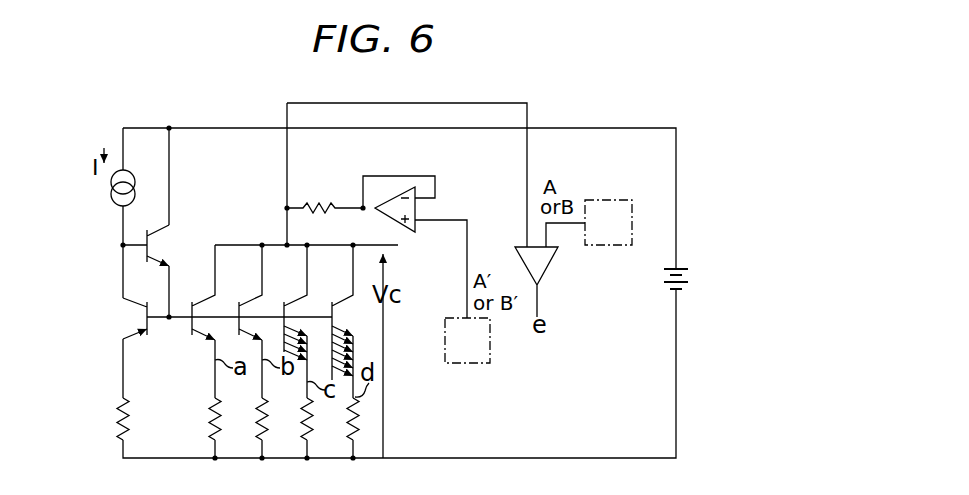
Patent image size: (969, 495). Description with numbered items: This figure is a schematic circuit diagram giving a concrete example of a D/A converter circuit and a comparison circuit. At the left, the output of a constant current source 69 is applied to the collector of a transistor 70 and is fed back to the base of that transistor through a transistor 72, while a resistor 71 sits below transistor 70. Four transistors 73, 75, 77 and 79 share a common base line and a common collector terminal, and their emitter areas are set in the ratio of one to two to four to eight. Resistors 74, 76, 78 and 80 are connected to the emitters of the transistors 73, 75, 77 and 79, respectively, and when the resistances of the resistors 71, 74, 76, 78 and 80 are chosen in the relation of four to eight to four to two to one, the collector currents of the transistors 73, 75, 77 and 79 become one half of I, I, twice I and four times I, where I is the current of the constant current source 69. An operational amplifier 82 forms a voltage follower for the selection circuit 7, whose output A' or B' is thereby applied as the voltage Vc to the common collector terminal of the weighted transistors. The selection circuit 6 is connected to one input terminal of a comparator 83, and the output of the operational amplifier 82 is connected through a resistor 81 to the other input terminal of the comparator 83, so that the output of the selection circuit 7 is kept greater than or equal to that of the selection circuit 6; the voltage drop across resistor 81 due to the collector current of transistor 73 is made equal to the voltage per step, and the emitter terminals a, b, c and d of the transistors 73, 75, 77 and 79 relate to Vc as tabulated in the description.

The constant current source 69 is at (111, 194).
The transistor 70 is at (121, 321).
The resistor 71 is at (113, 419).
The transistor 72 is at (155, 245).
The transistor 73 is at (201, 321).
The resistor 74 is at (204, 423).
The transistor 75 is at (248, 321).
The resistor 76 is at (250, 423).
The transistor 77 is at (294, 321).
The resistor 78 is at (294, 423).
The transistor 79 is at (340, 321).
The resistor 80 is at (339, 428).
The resistor 81 is at (325, 197).
The operational amplifier 82 is at (415, 233).
The comparator 83 is at (550, 270).
The selection circuit 6 is at (608, 222).
The selection circuit 7 is at (467, 340).